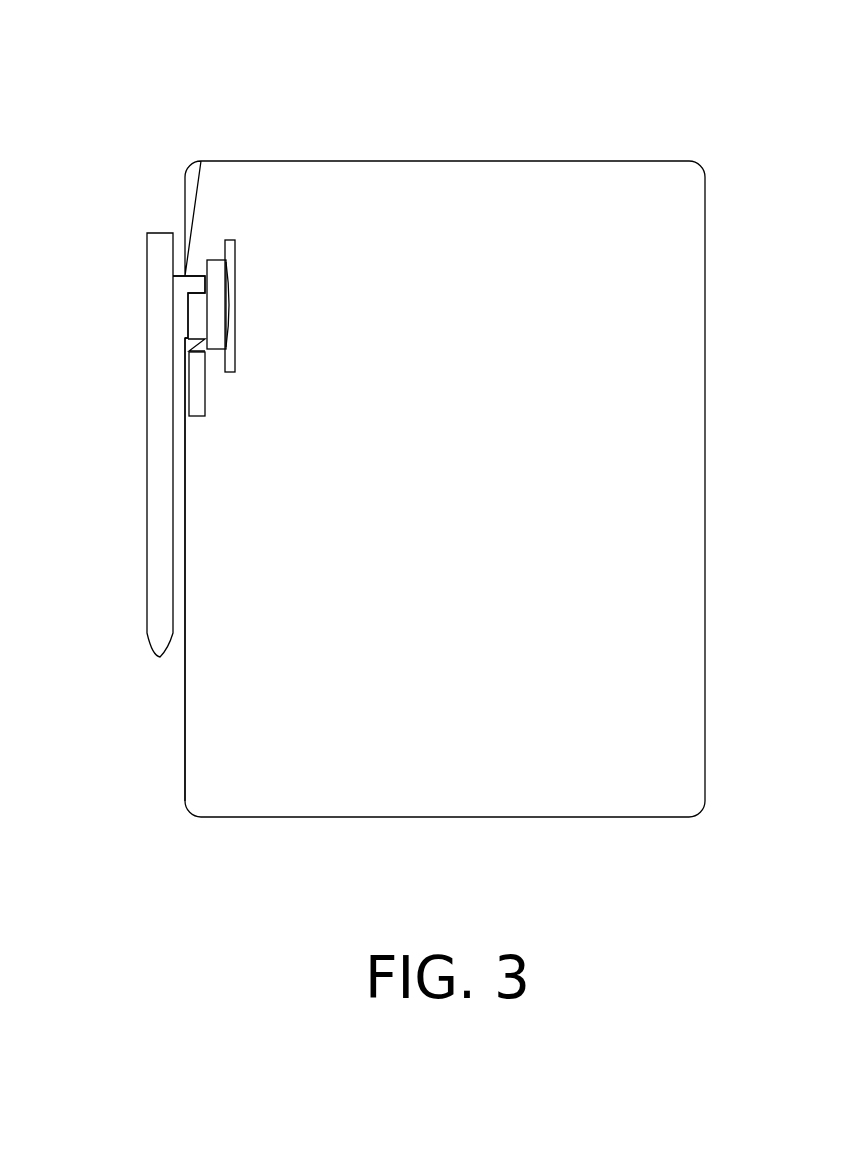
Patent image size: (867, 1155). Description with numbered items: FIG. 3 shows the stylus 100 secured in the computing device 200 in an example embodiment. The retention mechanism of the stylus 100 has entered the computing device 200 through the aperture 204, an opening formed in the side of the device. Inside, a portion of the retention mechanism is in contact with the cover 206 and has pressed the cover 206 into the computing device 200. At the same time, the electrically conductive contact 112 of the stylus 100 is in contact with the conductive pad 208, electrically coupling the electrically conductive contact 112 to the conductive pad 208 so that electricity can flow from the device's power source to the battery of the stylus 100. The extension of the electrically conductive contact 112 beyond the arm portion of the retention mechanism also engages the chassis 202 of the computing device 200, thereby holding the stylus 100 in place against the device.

The computing device 200 is at (427, 100).
The chassis 202 is at (205, 489).
The aperture 204 is at (175, 292).
The cover 206 is at (215, 260).
The conductive pad 208 is at (195, 417).
The electrically conductive contact 112 is at (198, 347).
The stylus 100 is at (147, 452).